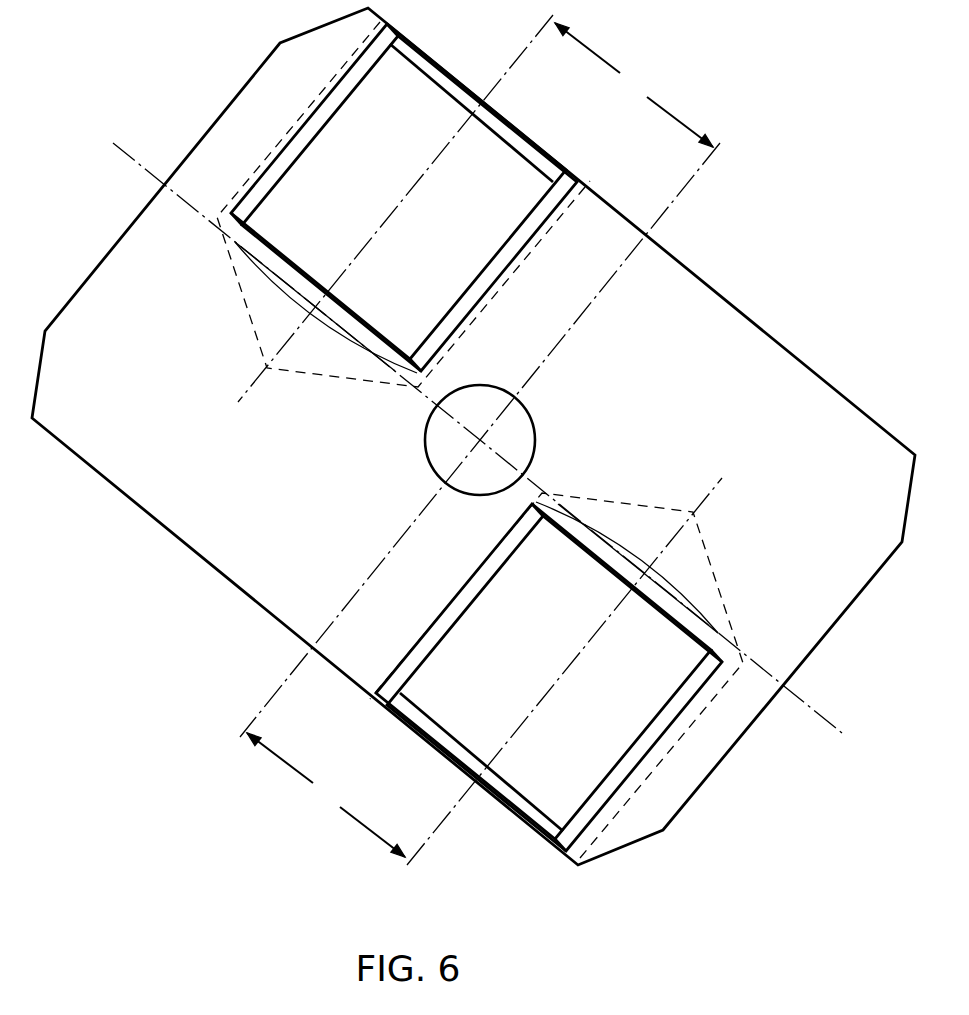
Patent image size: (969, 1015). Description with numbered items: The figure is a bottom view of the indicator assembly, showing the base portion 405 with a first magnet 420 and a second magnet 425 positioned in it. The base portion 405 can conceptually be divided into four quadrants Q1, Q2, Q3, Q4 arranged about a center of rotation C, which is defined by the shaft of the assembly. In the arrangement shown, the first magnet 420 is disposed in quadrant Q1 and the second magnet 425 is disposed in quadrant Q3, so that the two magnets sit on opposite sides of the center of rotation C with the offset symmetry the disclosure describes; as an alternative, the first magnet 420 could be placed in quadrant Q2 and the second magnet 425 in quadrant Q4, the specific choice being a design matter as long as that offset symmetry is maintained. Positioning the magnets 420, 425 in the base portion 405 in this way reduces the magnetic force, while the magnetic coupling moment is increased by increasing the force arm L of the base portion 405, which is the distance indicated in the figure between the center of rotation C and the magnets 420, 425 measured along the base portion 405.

The base portion 405 is at (832, 383).
The first magnet 420 is at (521, 715).
The second magnet 425 is at (373, 226).
The center of rotation C is at (482, 440).
The force arm L is at (480, 440).
The first quadrant Q1 is at (692, 756).
The second quadrant Q2 is at (859, 489).
The third quadrant Q3 is at (300, 83).
The fourth quadrant Q4 is at (92, 395).